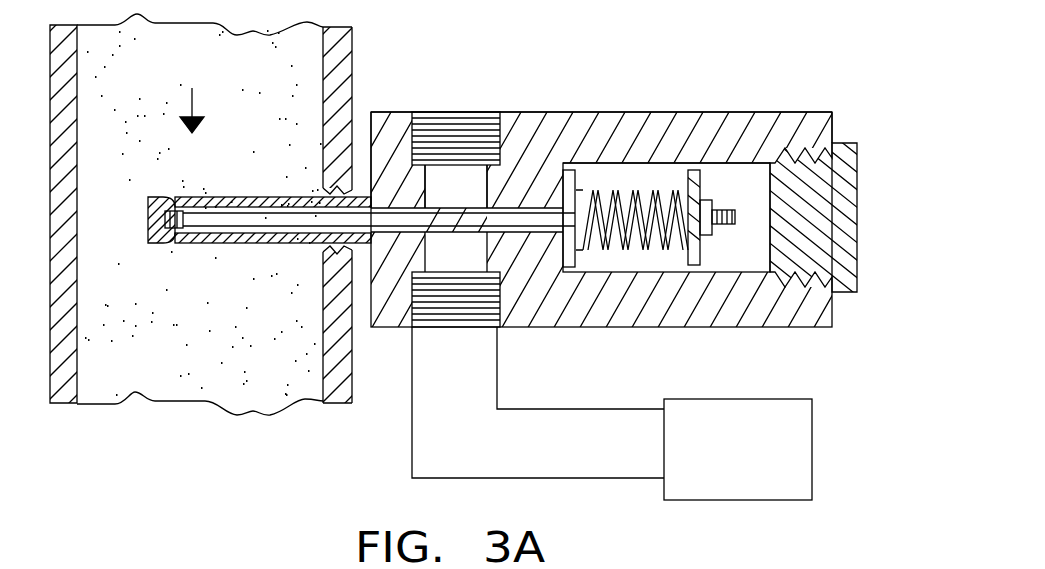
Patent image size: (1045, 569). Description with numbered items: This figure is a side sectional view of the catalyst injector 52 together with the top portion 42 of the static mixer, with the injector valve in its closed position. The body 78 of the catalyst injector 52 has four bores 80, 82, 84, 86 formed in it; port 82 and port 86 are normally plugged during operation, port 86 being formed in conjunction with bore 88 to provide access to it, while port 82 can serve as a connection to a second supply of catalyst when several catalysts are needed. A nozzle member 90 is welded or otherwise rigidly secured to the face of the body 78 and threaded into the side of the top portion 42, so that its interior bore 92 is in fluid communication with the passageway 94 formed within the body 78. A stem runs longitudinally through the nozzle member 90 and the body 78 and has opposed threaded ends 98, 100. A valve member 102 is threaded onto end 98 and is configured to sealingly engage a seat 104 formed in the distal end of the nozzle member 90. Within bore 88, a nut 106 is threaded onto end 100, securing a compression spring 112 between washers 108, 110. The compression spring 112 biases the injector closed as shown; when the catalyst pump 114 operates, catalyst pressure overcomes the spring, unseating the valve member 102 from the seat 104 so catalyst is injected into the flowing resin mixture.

The top portion 42 is at (352, 30).
The catalyst injector 52 is at (732, 108).
The body 78 is at (683, 323).
The bore 80 is at (382, 115).
The port 82 is at (428, 115).
The bore 84 is at (497, 327).
The port 86 is at (823, 127).
The bore 88 is at (790, 320).
The nozzle member 90 is at (243, 243).
The interior bore 92 is at (229, 200).
The passageway 94 is at (467, 208).
The threaded end 98 is at (195, 220).
The threaded end 100 is at (735, 210).
The valve member 102 is at (155, 243).
The seat 104 is at (183, 243).
The nut 106 is at (708, 232).
The washer 108 is at (703, 163).
The washer 110 is at (572, 168).
The compression spring 112 is at (648, 183).
The catalyst pump 114 is at (705, 490).